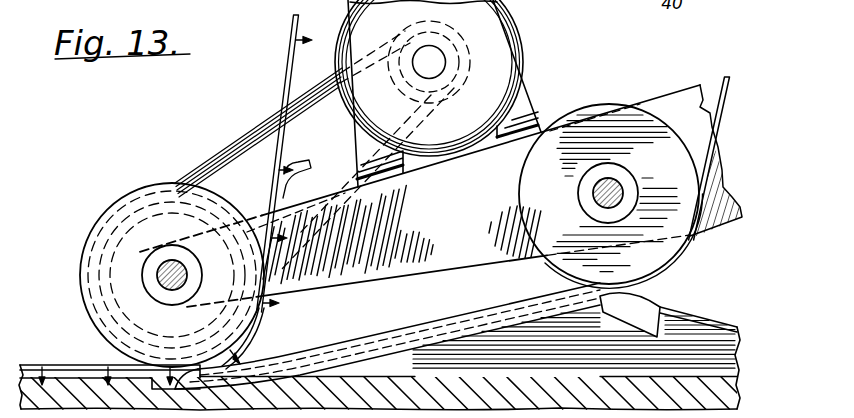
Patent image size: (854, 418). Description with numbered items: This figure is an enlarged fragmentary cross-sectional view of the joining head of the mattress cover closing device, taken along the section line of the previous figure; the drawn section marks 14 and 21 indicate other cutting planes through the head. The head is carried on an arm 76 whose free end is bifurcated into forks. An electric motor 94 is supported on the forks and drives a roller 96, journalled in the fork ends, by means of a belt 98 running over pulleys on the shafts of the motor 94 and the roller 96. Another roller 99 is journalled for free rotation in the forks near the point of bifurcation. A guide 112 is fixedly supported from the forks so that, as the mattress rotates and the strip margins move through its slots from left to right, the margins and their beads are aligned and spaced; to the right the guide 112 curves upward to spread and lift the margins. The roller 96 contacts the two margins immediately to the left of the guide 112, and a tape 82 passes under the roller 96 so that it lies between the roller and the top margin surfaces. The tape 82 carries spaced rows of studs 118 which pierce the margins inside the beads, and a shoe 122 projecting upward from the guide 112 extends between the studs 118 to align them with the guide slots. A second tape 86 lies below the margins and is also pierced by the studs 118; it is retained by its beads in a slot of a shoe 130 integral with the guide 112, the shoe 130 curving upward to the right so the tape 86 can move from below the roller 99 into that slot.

The section line 14- 14 is at (88, 199).
The section line 21 is at (43, 417).
The arm 76 is at (379, 268).
The tape 82 is at (287, 77).
The tape 86 is at (725, 78).
The electric motor 94 is at (505, 53).
The roller 96 is at (117, 268).
The belt 98 is at (222, 148).
The roller 99 is at (666, 166).
The guide 112 is at (637, 312).
The studs 118 is at (280, 305).
The shoe 122 is at (292, 166).
The shoe 130 is at (547, 294).